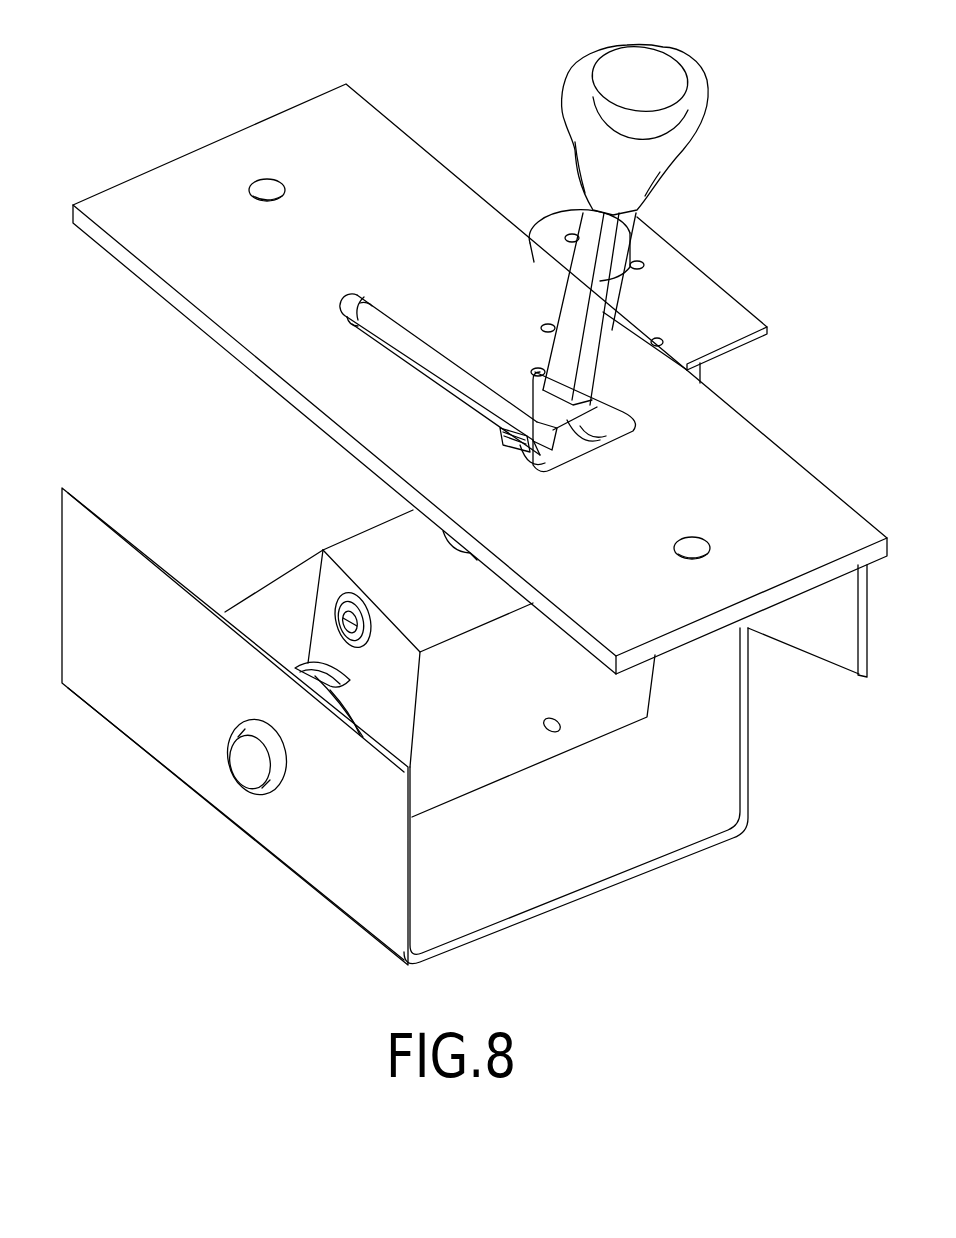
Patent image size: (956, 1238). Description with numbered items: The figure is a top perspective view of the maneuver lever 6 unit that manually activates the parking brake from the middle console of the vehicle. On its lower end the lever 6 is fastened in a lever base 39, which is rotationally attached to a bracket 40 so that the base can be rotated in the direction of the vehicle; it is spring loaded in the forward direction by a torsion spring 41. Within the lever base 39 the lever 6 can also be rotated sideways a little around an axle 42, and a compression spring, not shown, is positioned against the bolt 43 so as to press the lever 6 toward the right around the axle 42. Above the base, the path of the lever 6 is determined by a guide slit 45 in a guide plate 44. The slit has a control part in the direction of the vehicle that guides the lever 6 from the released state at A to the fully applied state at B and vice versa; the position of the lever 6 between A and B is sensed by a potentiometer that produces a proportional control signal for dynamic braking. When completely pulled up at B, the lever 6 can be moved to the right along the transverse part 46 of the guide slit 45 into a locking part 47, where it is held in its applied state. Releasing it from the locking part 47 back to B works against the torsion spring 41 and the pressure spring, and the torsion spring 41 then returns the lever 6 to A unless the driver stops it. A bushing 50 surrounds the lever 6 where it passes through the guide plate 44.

The maneuver lever 6 is at (578, 288).
The lever base 39 is at (455, 787).
The bracket 40 is at (290, 862).
The torsion spring 41 is at (305, 670).
The axle 42 is at (553, 737).
The bolt 43 is at (337, 617).
The guide plate 44 is at (796, 470).
The guide slit 45 is at (440, 385).
The transverse part 46 is at (597, 443).
The locking part 47 is at (600, 388).
The bushing 50 is at (562, 226).
The released position A is at (358, 303).
The fully applied position B is at (538, 460).